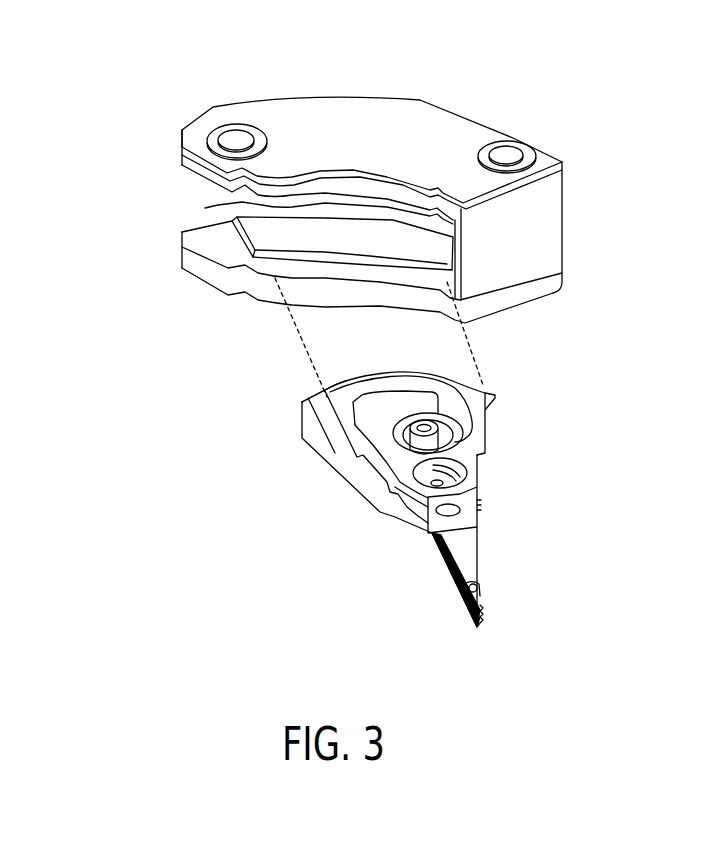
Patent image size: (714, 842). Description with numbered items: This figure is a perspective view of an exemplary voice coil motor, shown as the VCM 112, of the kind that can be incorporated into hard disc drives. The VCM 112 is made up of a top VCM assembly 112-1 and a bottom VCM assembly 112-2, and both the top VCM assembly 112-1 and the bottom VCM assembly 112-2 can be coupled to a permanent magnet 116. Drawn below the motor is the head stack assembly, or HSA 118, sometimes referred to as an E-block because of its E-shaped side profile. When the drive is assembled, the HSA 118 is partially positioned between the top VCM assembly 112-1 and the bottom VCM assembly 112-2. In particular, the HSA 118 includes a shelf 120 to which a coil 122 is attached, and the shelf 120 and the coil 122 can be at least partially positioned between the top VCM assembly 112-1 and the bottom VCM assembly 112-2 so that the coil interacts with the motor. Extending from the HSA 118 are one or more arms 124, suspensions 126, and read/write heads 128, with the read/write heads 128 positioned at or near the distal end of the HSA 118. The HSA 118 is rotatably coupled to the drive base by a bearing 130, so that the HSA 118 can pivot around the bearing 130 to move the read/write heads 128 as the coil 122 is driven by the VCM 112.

The VCM 112 is at (110, 87).
The top VCM assembly 112-1 is at (442, 120).
The bottom VCM assembly 112-2 is at (548, 284).
The permanent magnet 116 is at (278, 239).
The head stack assembly 118 is at (548, 425).
The shelf 120 is at (488, 392).
The coil 122 is at (365, 393).
The arm 124 is at (464, 493).
The suspension 126 is at (470, 562).
The read/write head 128 is at (483, 618).
The bearing 130 is at (440, 432).